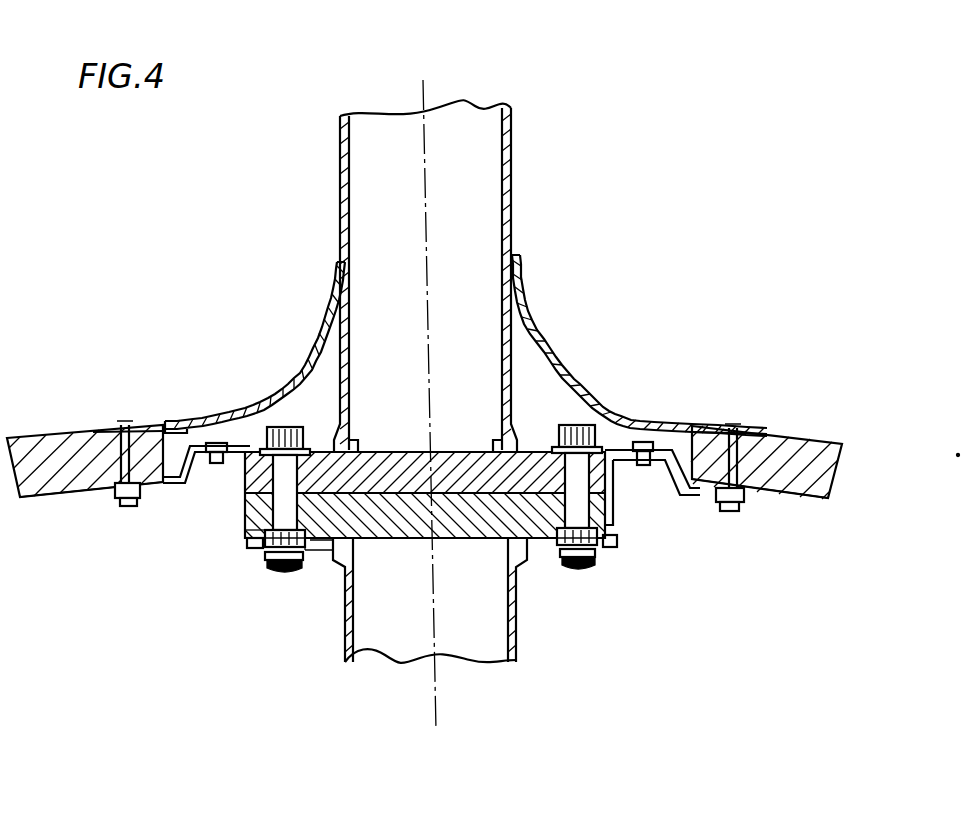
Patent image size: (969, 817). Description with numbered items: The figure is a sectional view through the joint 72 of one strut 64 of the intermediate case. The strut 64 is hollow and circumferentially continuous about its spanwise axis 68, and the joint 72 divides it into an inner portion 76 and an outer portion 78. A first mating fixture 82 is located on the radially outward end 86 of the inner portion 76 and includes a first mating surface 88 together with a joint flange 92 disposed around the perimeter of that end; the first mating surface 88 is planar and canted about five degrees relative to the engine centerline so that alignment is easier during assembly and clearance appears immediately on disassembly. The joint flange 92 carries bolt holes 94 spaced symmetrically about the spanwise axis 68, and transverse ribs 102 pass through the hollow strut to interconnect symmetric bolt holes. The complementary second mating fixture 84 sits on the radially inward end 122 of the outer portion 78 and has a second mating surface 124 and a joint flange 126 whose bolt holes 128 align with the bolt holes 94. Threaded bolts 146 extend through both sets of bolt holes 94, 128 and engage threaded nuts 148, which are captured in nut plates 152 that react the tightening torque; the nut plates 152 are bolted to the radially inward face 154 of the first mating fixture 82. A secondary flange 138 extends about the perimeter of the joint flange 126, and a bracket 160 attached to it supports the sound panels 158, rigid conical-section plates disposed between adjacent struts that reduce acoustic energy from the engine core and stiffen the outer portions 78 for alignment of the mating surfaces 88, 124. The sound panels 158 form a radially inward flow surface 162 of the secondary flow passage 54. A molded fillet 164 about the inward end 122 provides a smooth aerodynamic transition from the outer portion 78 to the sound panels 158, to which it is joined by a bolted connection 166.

The secondary flow passage 54 is at (637, 259).
The strut 64 is at (512, 181).
The spanwise axis 68 is at (426, 92).
The joint 72 is at (622, 508).
The inner portion 76 is at (345, 652).
The outer portion 78 is at (338, 208).
The first mating fixture 82 is at (613, 520).
The second mating fixture 84 is at (618, 500).
The radially outward end 86 is at (327, 547).
The first mating surface 88 is at (388, 510).
The joint flange 92 is at (243, 522).
The bolt holes 94 is at (232, 502).
The transverse ribs 102 is at (455, 540).
The radially inward end 122 is at (350, 440).
The second mating surface 124 is at (378, 500).
The joint flange 126 is at (243, 490).
The bolt holes 128 is at (317, 452).
The secondary flange 138 is at (628, 418).
The threaded bolts 146 is at (566, 425).
The threaded nuts 148 is at (618, 548).
The nut plates 152 is at (612, 542).
The radially inward face 154 is at (534, 553).
The sound panels 158 is at (792, 500).
The bracket 160 is at (262, 555).
The radially inward flow surface 162 is at (808, 437).
The molded fillet 164 is at (577, 383).
The bolted connection 166 is at (735, 425).